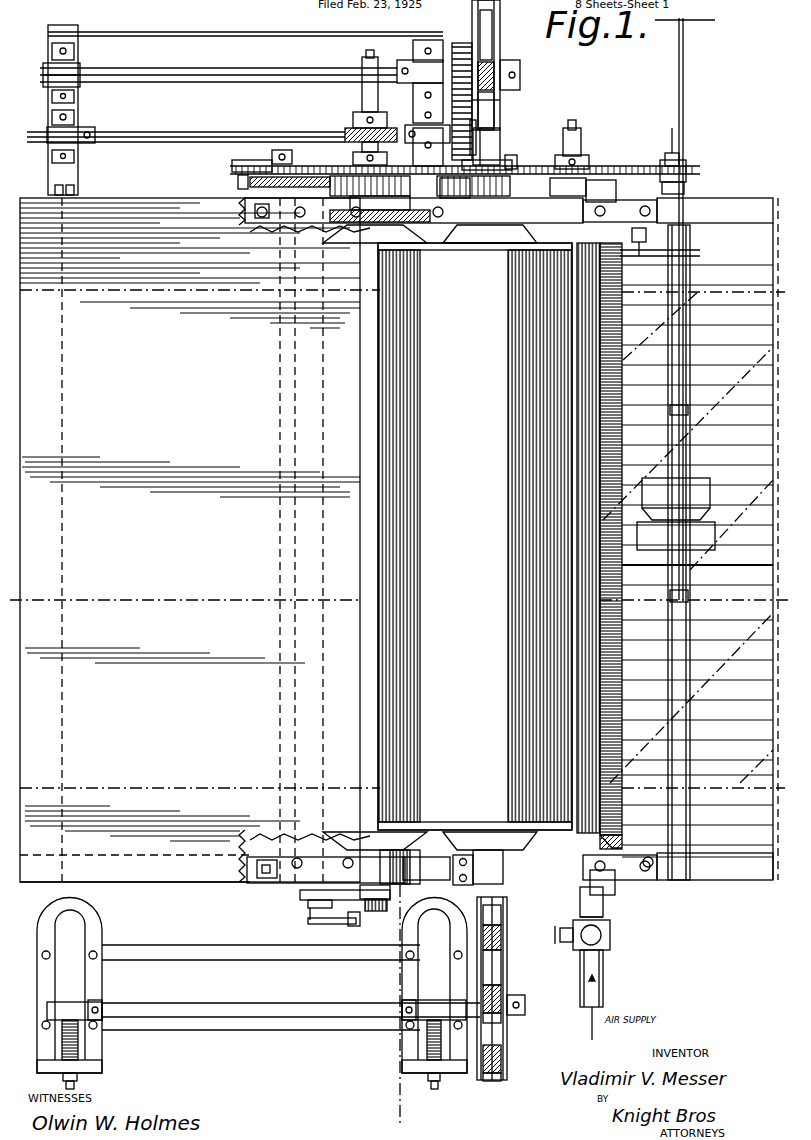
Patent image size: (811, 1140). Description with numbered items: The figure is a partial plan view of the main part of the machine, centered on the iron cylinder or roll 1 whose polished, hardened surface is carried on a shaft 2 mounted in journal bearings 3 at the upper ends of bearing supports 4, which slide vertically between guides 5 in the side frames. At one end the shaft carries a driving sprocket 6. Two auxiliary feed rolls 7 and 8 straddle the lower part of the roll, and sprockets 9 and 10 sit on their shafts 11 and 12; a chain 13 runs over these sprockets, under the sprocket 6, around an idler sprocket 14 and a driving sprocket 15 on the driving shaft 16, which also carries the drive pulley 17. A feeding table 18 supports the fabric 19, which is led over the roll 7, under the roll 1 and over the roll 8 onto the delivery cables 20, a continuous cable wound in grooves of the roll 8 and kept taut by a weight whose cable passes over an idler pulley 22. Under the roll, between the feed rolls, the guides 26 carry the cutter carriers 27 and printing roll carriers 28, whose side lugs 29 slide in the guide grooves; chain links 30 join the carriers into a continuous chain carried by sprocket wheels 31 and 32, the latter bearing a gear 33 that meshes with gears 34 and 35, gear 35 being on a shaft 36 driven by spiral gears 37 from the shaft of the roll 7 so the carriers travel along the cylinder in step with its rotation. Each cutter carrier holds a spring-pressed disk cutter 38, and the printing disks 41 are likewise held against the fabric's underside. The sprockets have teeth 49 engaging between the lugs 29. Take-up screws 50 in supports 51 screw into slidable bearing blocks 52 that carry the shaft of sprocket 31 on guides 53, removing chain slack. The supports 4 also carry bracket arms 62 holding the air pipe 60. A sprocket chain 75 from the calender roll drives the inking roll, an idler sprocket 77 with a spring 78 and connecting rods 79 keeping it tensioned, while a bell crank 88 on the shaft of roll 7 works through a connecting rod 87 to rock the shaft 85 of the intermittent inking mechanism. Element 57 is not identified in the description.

The iron cylinder or roll 1 is at (475, 536).
The shaft 2 is at (498, 138).
The journal bearings 3 is at (520, 210).
The bearing supports 4 is at (400, 601).
The guides 5 is at (585, 178).
The driving sprocket 6 is at (505, 162).
The auxiliary feed roll 7 is at (383, 692).
The auxiliary feed roll 8 is at (625, 840).
The sprocket 9 is at (353, 158).
The sprocket 10 is at (580, 155).
The shaft 11 is at (366, 68).
The shaft 12 is at (575, 128).
The chain 13 is at (628, 166).
The idler sprocket 14 is at (272, 162).
The driving sprocket 15 is at (680, 166).
The driving shaft 16 is at (685, 309).
The drive pulley 17 is at (740, 560).
The feeding table 18 is at (200, 540).
The fabric 19 is at (130, 790).
The cables 20 is at (740, 265).
The idler pulley 22 is at (660, 250).
The guides 26 is at (505, 140).
The cutter carriers 27 is at (508, 66).
The printing roll carriers 28 is at (490, 28).
The side lugs 29 is at (498, 100).
The chain links 30 is at (494, 44).
The sprocket wheel 31 is at (508, 1078).
The sprocket wheel 32 is at (520, 108).
The gear 33 is at (455, 46).
The gear 34 is at (432, 80).
The gear 35 is at (430, 130).
The shaft 36 is at (172, 134).
The spiral gears 37 is at (350, 130).
The disk cutter 38 is at (483, 930).
The printing disks 41 is at (483, 998).
The teeth 49 is at (520, 75).
The take-up screws 50 is at (80, 1086).
The supports 51 is at (92, 1066).
The slidable bearing blocks 52 is at (85, 1010).
The guides 53 is at (95, 970).
The screen 57 is at (580, 675).
The air pipe 60 is at (622, 432).
The bracket arms 62 is at (580, 205).
The sprocket chain 75 is at (520, 165).
The idler sprocket 77 is at (430, 198).
The spring 78 is at (250, 182).
The connecting rods 79 is at (340, 206).
The shaft 85 is at (300, 896).
The connecting rod 87 is at (322, 922).
The bell crank 88 is at (375, 908).